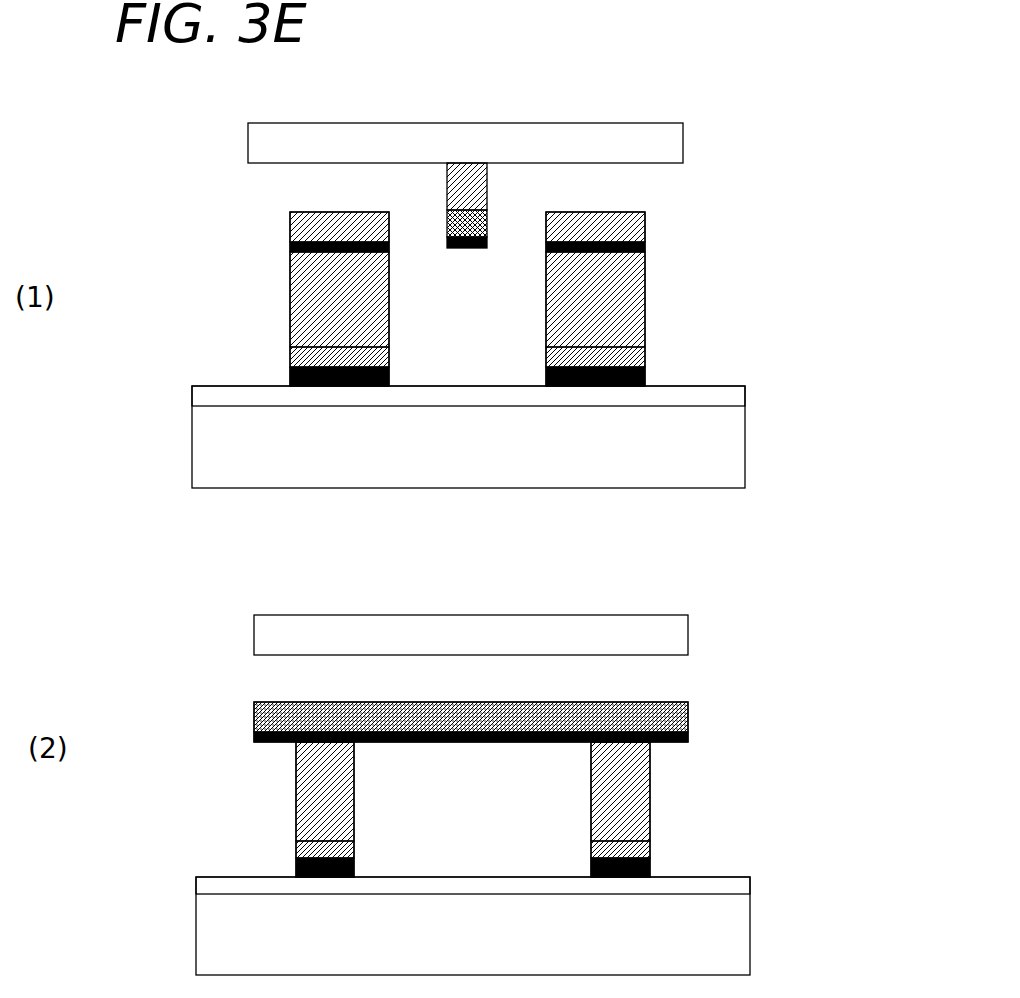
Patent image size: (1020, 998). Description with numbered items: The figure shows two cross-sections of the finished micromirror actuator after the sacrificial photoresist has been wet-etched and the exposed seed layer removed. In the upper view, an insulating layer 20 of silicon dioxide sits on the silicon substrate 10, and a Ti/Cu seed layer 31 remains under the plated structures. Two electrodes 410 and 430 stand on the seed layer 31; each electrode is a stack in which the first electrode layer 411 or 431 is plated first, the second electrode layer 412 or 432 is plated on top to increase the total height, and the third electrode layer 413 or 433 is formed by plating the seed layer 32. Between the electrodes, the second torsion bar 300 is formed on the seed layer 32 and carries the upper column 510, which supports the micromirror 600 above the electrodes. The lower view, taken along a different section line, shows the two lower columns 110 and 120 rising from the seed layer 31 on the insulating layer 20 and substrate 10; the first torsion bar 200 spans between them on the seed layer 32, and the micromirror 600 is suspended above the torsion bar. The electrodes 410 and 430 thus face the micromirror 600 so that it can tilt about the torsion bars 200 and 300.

The substrate 10 is at (745, 432).
The insulating layer 20 is at (745, 403).
The Ti/Cu seed layer 31 is at (546, 377).
The seed layer 32 is at (478, 250).
The lower column 110 is at (661, 742).
The lower column 120 is at (284, 743).
The first torsion bar 200 is at (688, 713).
The second torsion bar 300 is at (490, 208).
The electrode 410 is at (697, 299).
The first electrode layer 411 is at (664, 362).
The second electrode layer 412 is at (645, 305).
The third electrode layer 413 is at (645, 233).
The electrode 430 is at (237, 299).
The first electrode layer 431 is at (270, 366).
The second electrode layer 432 is at (289, 310).
The third electrode layer 433 is at (289, 240).
The upper column 510 is at (447, 182).
The micromirror 600 is at (683, 140).